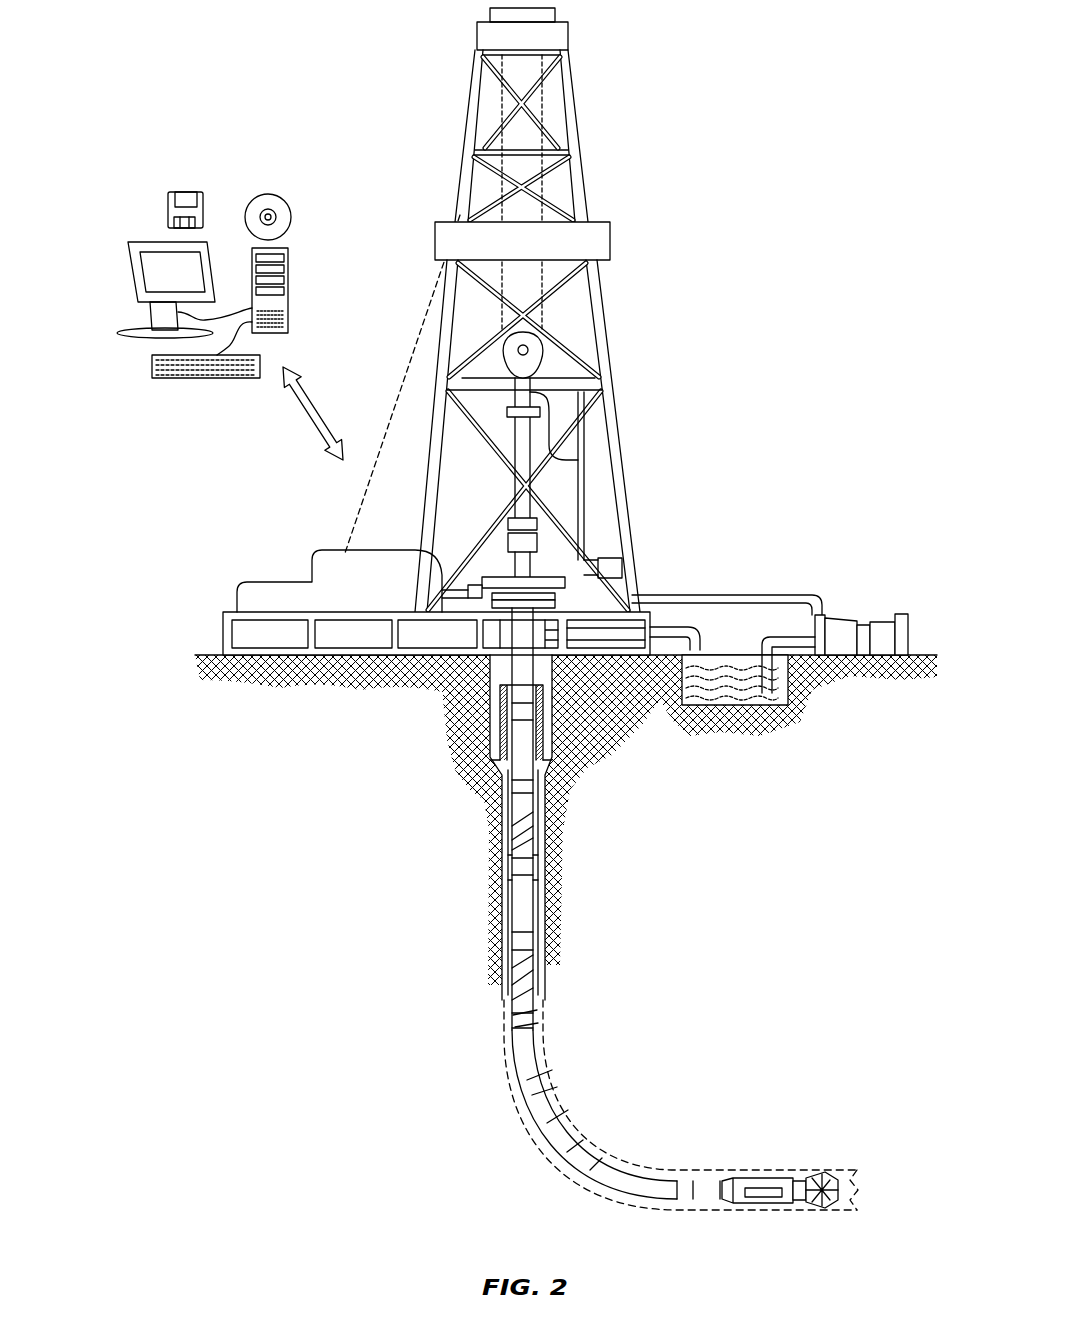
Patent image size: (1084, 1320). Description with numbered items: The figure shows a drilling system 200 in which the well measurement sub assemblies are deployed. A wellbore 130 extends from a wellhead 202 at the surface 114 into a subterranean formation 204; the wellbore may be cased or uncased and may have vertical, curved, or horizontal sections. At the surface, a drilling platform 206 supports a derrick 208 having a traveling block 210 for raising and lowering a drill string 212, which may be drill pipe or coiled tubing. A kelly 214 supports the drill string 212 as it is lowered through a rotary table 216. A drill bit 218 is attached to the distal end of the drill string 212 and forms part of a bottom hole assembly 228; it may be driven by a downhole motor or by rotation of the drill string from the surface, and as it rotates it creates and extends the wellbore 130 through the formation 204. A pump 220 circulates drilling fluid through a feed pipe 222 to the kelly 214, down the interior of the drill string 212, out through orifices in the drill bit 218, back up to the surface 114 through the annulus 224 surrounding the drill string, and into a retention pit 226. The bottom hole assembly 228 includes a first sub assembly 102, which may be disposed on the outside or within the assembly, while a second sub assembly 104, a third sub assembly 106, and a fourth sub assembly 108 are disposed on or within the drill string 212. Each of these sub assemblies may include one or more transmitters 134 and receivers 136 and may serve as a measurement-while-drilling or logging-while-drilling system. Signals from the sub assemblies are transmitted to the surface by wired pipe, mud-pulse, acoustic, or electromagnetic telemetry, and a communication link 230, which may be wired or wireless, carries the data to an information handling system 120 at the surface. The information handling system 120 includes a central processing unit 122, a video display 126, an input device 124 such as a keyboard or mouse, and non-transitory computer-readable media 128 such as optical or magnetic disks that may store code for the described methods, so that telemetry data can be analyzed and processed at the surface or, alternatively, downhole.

The drilling system 200 is at (842, 116).
The derrick 208 is at (582, 163).
The traveling block 210 is at (544, 353).
The kelly 214 is at (524, 437).
The rotary table 216 is at (560, 565).
The wellhead 202 is at (567, 601).
The drilling platform 206 is at (223, 633).
The feed pipe 222 is at (762, 596).
The pump 220 is at (843, 616).
The surface 114 is at (920, 655).
The retention pit 226 is at (728, 693).
The drill string 212 is at (536, 832).
The fourth sub assembly 108 is at (523, 827).
The annulus 224 is at (508, 860).
The wellbore 130 is at (543, 860).
The third sub assembly 106 is at (523, 982).
The second sub assembly 104 is at (560, 1137).
The transmitter 134 is at (523, 813).
The receiver 136 is at (523, 840).
The bottom hole assembly 228 is at (729, 1177).
The first sub assembly 102 is at (764, 1197).
The drill bit 218 is at (825, 1172).
The subterranean formation 204 is at (732, 953).
The information handling system 120 is at (133, 183).
The non-transitory computer-readable media 128 is at (268, 194).
The video display 126 is at (133, 283).
The central processing unit 122 is at (288, 263).
The input device 124 is at (165, 378).
The communication link 230 is at (303, 418).